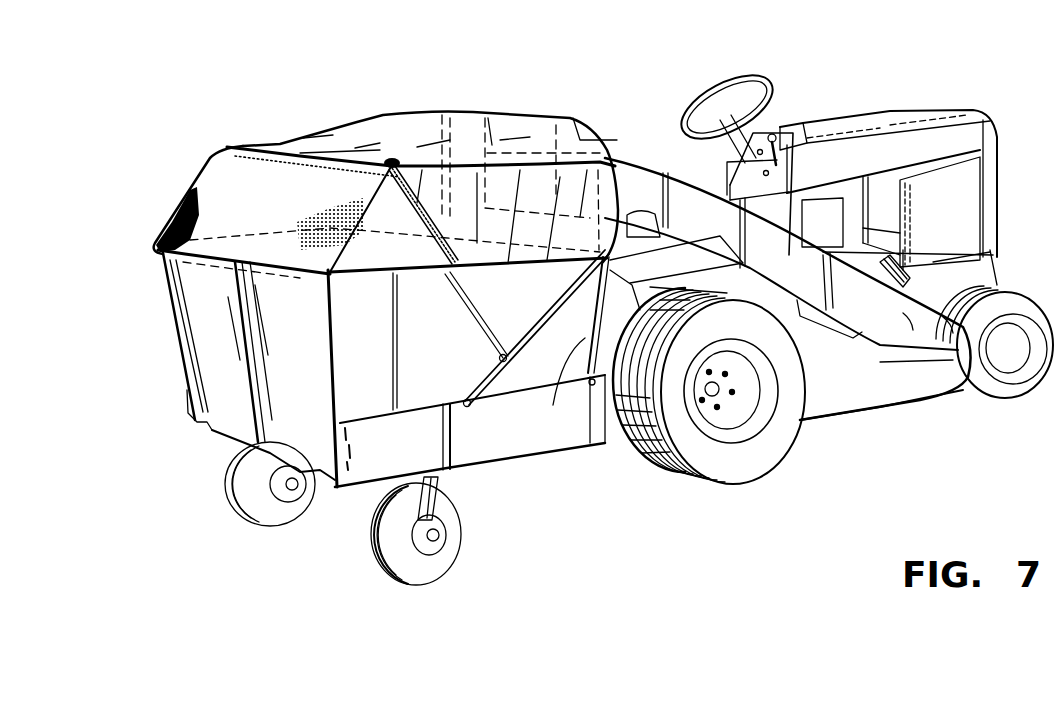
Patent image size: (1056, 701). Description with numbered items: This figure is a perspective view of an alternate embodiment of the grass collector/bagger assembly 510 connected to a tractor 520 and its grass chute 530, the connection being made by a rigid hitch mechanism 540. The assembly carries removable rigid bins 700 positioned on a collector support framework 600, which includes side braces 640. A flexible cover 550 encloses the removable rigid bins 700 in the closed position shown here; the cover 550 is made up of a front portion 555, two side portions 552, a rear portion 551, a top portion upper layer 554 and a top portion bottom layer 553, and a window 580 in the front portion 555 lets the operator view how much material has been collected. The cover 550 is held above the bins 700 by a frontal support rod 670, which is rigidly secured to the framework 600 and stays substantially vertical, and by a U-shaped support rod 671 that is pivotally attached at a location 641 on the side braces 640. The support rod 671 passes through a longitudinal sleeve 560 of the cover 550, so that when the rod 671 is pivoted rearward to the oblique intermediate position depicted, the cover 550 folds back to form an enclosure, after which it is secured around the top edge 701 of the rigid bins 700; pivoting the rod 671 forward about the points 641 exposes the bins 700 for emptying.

The grass collector/bagger assembly 510 is at (492, 512).
The tractor 520 is at (912, 103).
The grass chute 530 is at (681, 183).
The rigid hitch mechanism 540 is at (628, 440).
The flexible cover 550 is at (406, 108).
The rear portion 551 is at (213, 188).
The side portions 552 is at (253, 190).
The top portion bottom layer 553 is at (386, 160).
The top portion upper layer 554 is at (386, 150).
The front portion 555 is at (506, 112).
The longitudinal sleeve 560 is at (443, 250).
The window 580 is at (488, 118).
The collector support framework 600 is at (359, 480).
The side braces 640 is at (537, 344).
The pivot location 641 is at (503, 358).
The frontal support rod 670 is at (557, 440).
The support rod 671 is at (459, 295).
The removable rigid bins 700 is at (203, 333).
The top edge 701 is at (193, 265).